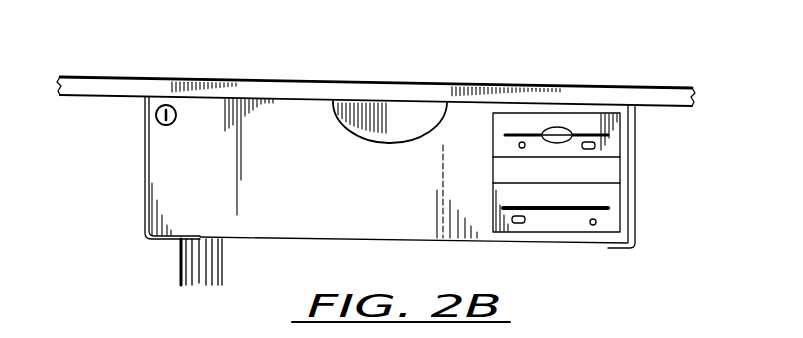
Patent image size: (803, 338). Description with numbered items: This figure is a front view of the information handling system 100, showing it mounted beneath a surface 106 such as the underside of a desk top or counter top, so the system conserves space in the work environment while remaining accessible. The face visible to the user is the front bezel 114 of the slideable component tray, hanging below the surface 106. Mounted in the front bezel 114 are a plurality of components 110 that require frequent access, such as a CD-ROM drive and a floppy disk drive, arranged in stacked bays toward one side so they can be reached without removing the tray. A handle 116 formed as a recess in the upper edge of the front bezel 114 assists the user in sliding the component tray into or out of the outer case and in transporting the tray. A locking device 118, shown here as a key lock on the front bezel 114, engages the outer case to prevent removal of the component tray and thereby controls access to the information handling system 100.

The information handling system 100 is at (394, 165).
The surface 106 is at (612, 88).
The components 110 is at (611, 130).
The front bezel 114 is at (173, 165).
The handle 116 is at (407, 112).
The locking device 118 is at (163, 106).